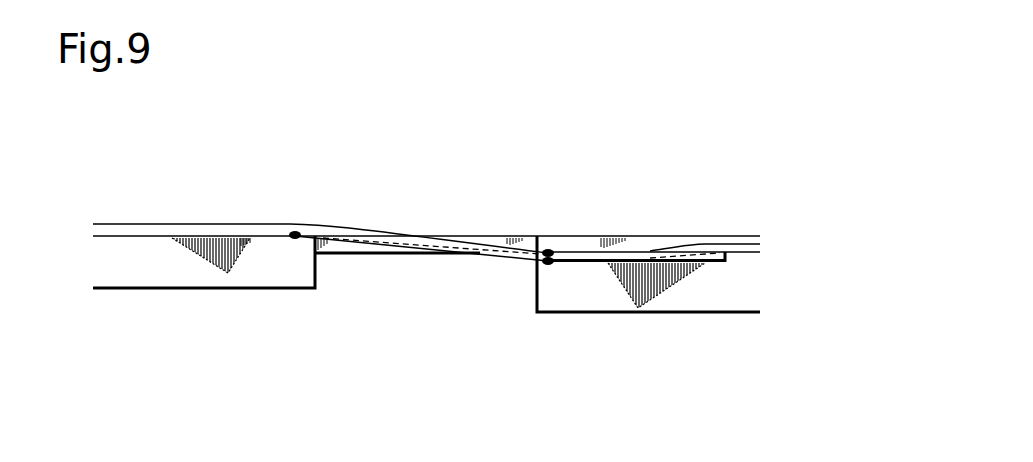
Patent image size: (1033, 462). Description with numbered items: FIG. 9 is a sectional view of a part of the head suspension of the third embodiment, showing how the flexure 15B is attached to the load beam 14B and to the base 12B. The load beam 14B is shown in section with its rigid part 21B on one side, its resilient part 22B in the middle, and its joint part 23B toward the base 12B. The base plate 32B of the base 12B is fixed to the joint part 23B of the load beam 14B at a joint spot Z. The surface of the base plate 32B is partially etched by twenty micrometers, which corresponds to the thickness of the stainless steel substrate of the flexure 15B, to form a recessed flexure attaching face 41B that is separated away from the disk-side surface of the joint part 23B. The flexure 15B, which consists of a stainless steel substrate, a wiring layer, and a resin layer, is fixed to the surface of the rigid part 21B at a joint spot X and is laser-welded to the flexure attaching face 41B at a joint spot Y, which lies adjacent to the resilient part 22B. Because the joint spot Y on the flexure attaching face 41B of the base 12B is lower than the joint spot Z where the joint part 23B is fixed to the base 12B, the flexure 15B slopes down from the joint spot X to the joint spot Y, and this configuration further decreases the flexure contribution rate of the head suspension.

The base 12B is at (681, 232).
The load beam 14B is at (288, 291).
The flexure 15B is at (433, 240).
The rigid part 21B is at (205, 260).
The resilient part 22B is at (338, 256).
The joint part 23B is at (603, 236).
The base plate 32B is at (581, 285).
The flexure attaching face 41B is at (570, 259).
The joint spot X is at (295, 233).
The joint spot Y is at (549, 264).
The joint spot Z is at (548, 250).